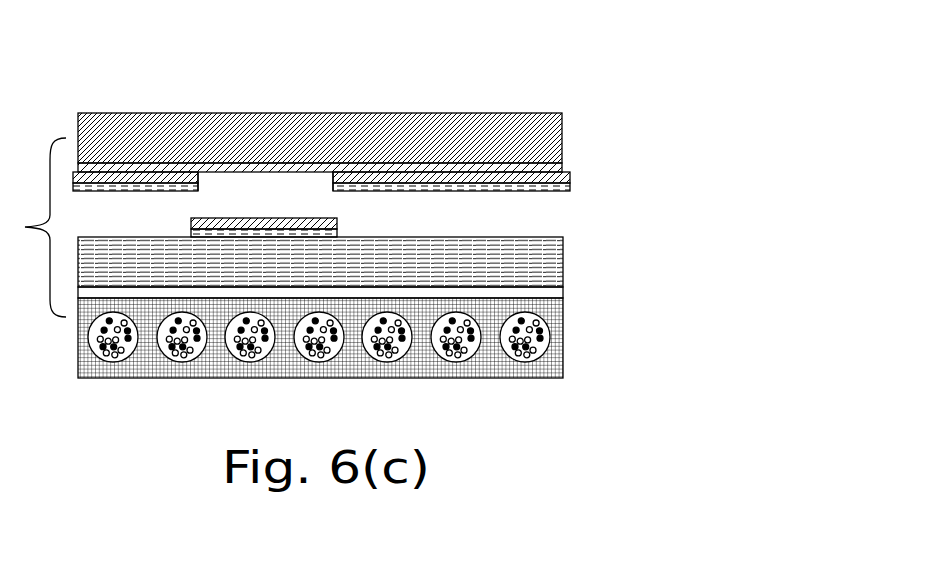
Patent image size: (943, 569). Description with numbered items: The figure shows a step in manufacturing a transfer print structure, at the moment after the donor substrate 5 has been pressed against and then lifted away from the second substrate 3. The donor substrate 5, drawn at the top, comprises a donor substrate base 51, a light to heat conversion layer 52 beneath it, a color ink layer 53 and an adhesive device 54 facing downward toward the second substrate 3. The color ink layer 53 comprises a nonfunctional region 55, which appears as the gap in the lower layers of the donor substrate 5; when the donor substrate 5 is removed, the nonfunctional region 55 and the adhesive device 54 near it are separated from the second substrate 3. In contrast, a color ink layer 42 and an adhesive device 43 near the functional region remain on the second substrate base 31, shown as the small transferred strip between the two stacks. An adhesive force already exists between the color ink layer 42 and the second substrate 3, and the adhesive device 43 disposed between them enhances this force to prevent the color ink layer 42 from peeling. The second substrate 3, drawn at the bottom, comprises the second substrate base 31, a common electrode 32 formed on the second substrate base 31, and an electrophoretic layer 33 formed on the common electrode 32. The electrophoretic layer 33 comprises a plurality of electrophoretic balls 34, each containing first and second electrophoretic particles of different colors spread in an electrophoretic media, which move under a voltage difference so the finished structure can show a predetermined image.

The donor substrate 5 is at (548, 92).
The donor substrate base 51 is at (562, 135).
The light to heat conversion layer 52 is at (562, 166).
The color ink layer 53 is at (570, 177).
The adhesive device 54 is at (570, 188).
The nonfunctional region 55 is at (333, 184).
The color ink layer 42 is at (337, 218).
The adhesive device 43 is at (337, 230).
The second substrate 3 is at (371, 307).
The second substrate base 31 is at (563, 257).
The common electrode 32 is at (563, 293).
The electrophoretic layer 33 is at (563, 360).
The electrophoretic balls 34 is at (356, 333).